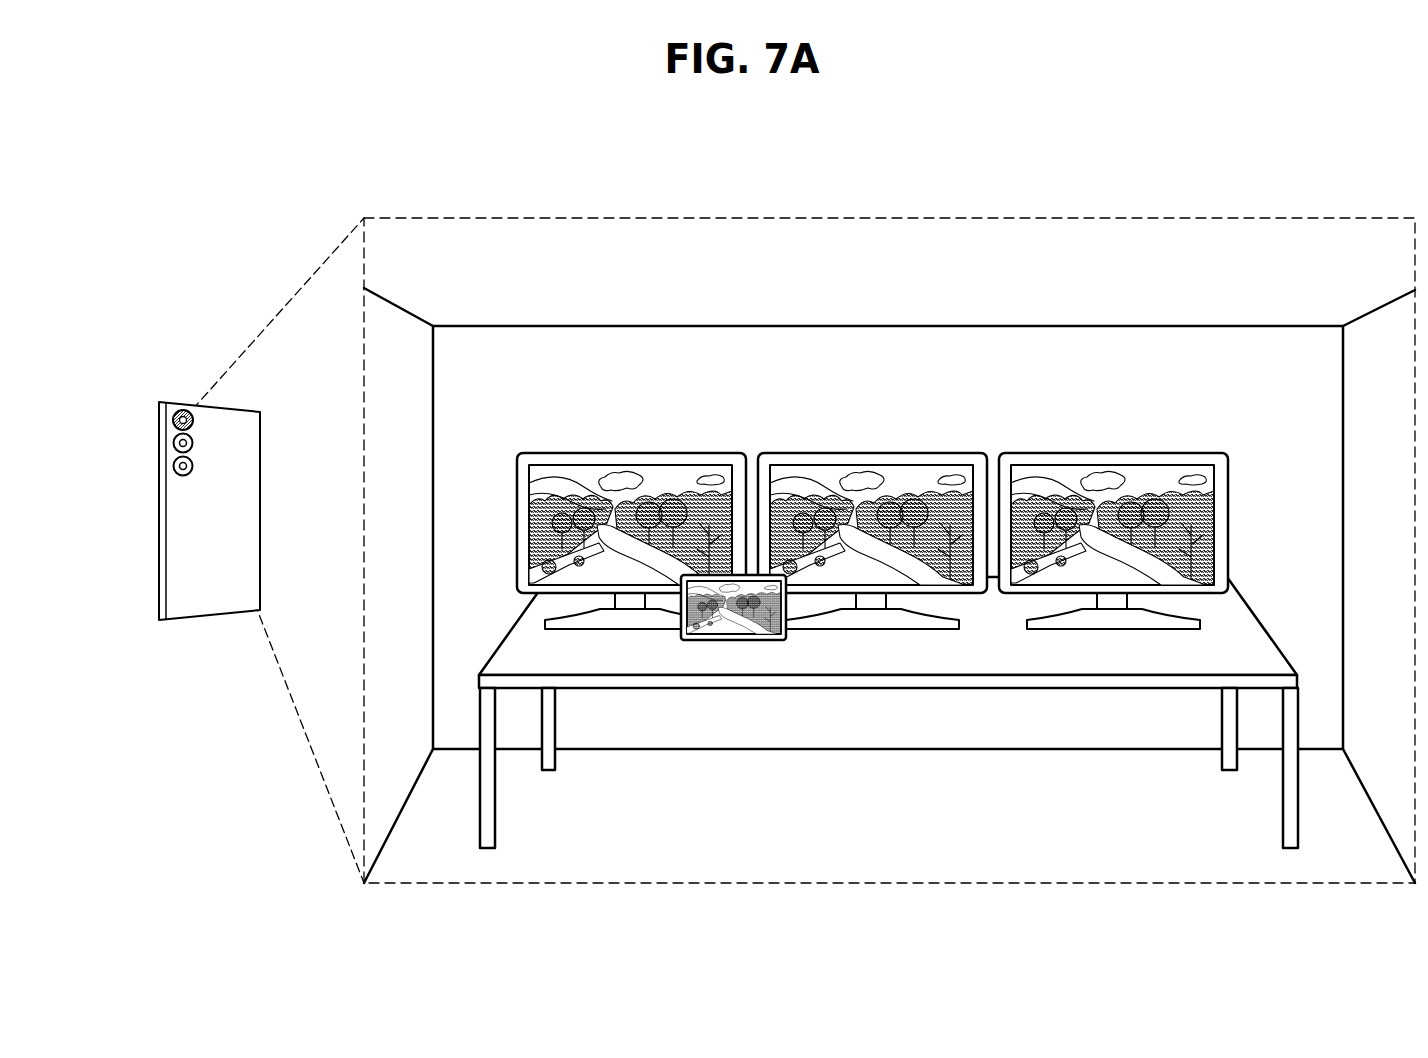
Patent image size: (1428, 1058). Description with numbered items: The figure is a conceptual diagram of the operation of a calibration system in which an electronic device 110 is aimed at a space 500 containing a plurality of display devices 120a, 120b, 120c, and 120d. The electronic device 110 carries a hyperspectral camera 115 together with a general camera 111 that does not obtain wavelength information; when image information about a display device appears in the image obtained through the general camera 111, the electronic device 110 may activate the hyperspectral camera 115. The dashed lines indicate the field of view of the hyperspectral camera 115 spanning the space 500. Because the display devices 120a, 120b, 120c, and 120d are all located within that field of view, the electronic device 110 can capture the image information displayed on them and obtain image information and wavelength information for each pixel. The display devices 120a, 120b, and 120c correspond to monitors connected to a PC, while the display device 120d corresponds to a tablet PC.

The space 500 is at (1314, 218).
The electronic device 110 is at (215, 598).
The hyperspectral camera 115 is at (183, 410).
The general camera 111 is at (172, 466).
The display device 120a is at (635, 460).
The display device 120b is at (875, 460).
The display device 120c is at (1117, 460).
The display device 120d is at (733, 628).